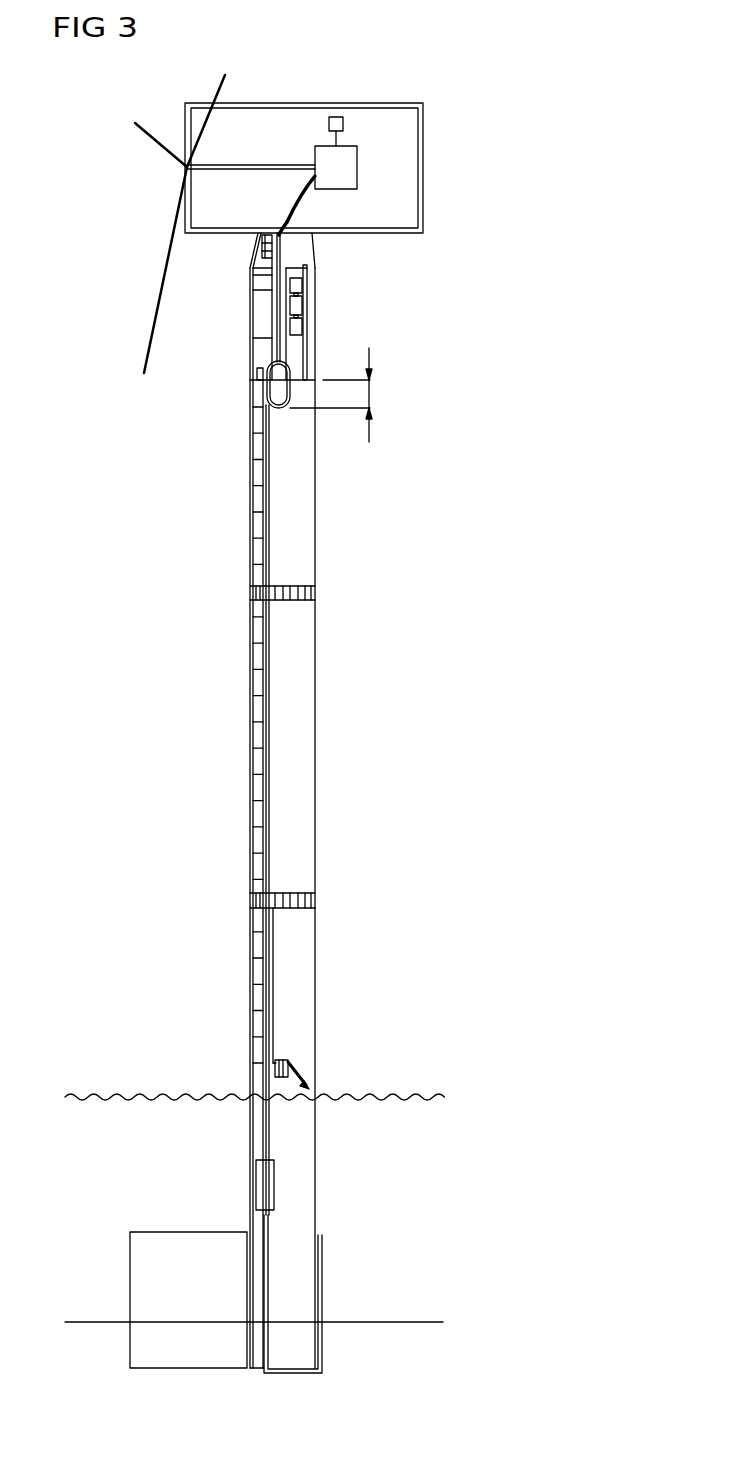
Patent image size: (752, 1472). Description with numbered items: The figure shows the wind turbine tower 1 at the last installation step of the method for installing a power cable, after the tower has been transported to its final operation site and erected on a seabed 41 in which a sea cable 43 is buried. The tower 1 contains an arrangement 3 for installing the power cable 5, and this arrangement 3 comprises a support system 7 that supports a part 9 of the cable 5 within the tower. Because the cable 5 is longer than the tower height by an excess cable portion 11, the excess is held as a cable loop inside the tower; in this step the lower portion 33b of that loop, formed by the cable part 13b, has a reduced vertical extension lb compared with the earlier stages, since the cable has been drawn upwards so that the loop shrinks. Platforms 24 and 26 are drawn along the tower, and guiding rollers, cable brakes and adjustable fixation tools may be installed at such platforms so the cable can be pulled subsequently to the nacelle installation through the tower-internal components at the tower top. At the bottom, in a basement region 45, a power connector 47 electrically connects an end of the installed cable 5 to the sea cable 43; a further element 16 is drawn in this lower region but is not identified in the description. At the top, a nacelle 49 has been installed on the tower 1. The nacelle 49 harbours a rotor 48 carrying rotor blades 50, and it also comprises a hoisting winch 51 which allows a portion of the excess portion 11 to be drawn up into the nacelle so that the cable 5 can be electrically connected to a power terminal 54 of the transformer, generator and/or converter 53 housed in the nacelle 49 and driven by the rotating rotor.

The wind turbine tower 1 is at (92, 143).
The arrangement for installing a power cable 3 is at (229, 374).
The power cable 5 is at (263, 533).
The support system 7 is at (340, 357).
The part of cable section 9 is at (268, 362).
The excess cable portion 11 is at (298, 205).
The cable part 13b is at (283, 408).
The cable section 16 is at (264, 1158).
The platform 24 is at (315, 588).
The platform 26 is at (315, 895).
The lower portion of cable loop 33b is at (303, 430).
The seabed 41 is at (408, 1320).
The sea cable 43 is at (268, 1255).
The basement region 45 is at (315, 1143).
The power connector 47 is at (256, 1183).
The rotor 48 is at (238, 166).
The nacelle 49 is at (186, 109).
The rotor blades 50 is at (224, 88).
The hoisting winch 51 is at (335, 114).
The transformer or generator and/or converter 53 is at (352, 163).
The power terminal 54 is at (310, 174).
The vertical extension of lower loop portion lb is at (375, 395).